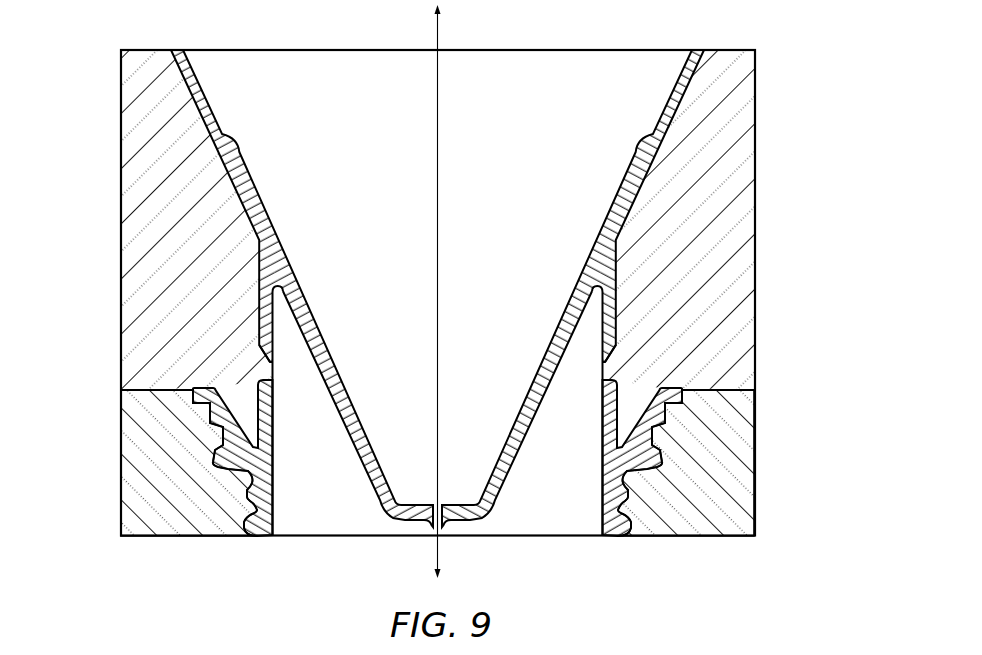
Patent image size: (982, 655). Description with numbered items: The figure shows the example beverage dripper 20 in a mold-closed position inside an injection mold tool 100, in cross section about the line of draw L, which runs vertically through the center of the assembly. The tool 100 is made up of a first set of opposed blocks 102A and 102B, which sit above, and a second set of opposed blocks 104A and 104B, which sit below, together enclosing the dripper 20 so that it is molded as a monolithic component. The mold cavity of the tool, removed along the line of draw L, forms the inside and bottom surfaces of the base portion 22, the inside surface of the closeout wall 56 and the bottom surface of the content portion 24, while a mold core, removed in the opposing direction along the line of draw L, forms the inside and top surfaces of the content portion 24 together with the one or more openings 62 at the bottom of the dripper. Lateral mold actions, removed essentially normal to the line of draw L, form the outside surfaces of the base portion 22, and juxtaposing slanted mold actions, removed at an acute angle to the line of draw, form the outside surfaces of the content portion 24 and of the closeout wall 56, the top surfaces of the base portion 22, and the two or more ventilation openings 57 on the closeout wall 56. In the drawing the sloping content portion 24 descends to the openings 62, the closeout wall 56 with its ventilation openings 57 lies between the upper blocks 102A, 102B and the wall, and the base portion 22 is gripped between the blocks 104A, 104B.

The beverage dripper 20 is at (376, 299).
The base portion 22 is at (258, 523).
The content portion 24 is at (233, 163).
The closeout wall 56 is at (260, 322).
The ventilation openings 57 is at (262, 359).
The openings 62 is at (458, 520).
The injection mold tool 100 is at (437, 293).
The opposed block 102A is at (145, 221).
The opposed block 102B is at (732, 173).
The opposed block 104A is at (143, 463).
The opposed block 104B is at (732, 480).
The line of draw L is at (438, 35).